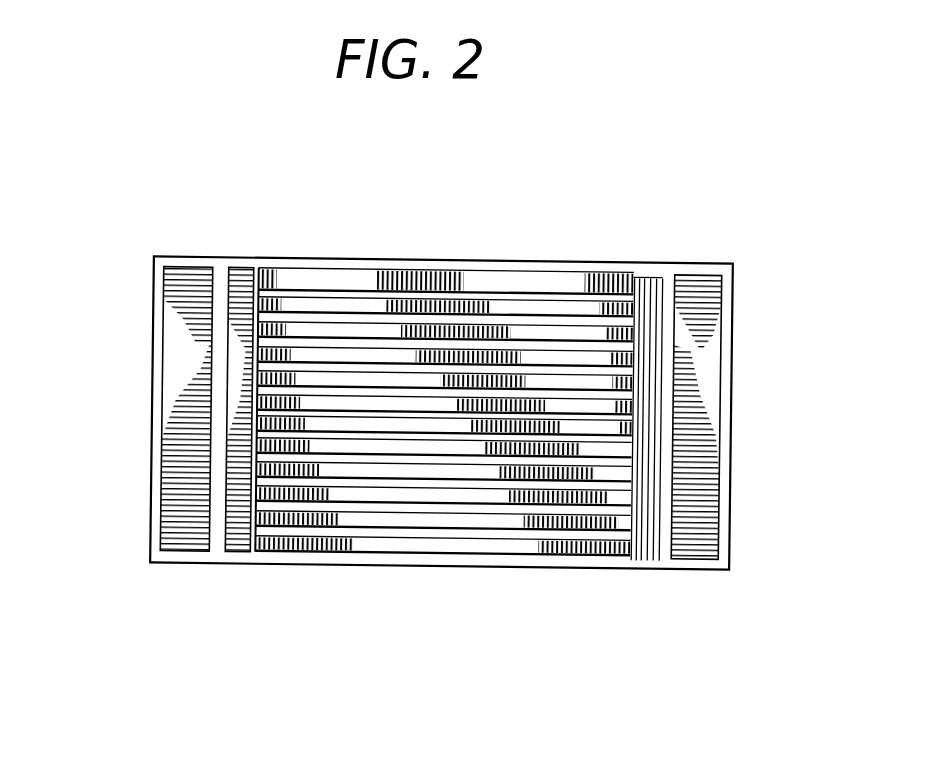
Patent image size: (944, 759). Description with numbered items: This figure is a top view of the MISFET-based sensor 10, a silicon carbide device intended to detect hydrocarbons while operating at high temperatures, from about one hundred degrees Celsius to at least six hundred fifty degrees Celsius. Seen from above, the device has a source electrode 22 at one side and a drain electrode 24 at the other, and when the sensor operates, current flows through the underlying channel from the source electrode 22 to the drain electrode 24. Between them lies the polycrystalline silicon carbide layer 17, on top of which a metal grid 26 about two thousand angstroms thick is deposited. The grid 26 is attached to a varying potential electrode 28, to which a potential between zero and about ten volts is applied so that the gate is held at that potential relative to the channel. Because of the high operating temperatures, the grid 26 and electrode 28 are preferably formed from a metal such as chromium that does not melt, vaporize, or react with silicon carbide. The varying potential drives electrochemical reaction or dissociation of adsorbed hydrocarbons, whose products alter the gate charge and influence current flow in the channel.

The sensor 10 is at (122, 373).
The polycrystalline silicon carbide layer 17 is at (574, 483).
The source electrode 22 is at (168, 525).
The drain electrode 24 is at (707, 432).
The metal grid 26 is at (530, 282).
The varying potential electrode 28 is at (241, 268).